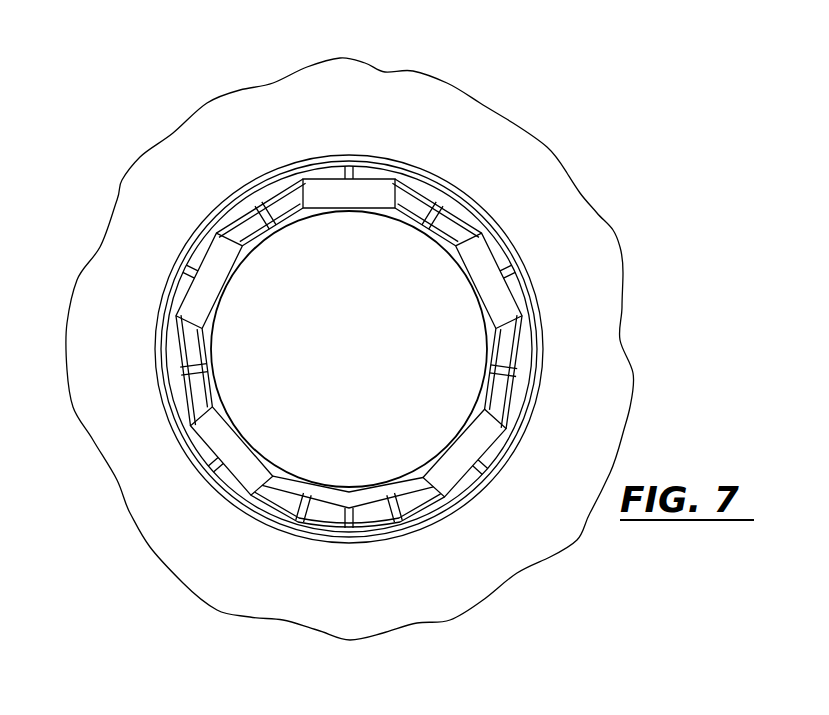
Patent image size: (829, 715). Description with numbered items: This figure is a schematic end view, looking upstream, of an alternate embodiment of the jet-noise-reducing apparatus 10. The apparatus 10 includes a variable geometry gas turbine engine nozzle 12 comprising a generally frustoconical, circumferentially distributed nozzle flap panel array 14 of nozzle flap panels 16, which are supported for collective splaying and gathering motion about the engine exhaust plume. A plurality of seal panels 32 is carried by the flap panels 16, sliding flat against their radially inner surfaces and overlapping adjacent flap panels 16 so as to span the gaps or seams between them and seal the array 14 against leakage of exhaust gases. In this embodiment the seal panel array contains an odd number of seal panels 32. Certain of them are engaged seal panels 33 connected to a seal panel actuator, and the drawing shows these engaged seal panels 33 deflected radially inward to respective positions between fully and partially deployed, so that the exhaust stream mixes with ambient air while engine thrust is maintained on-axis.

The apparatus 10 is at (122, 80).
The variable geometry gas turbine engine nozzle 12 is at (536, 214).
The nozzle flap panel array 14 is at (530, 286).
The nozzle flap panels 16 is at (273, 200).
The seal panels 32 is at (297, 207).
The engaged seal panels 33 is at (398, 207).